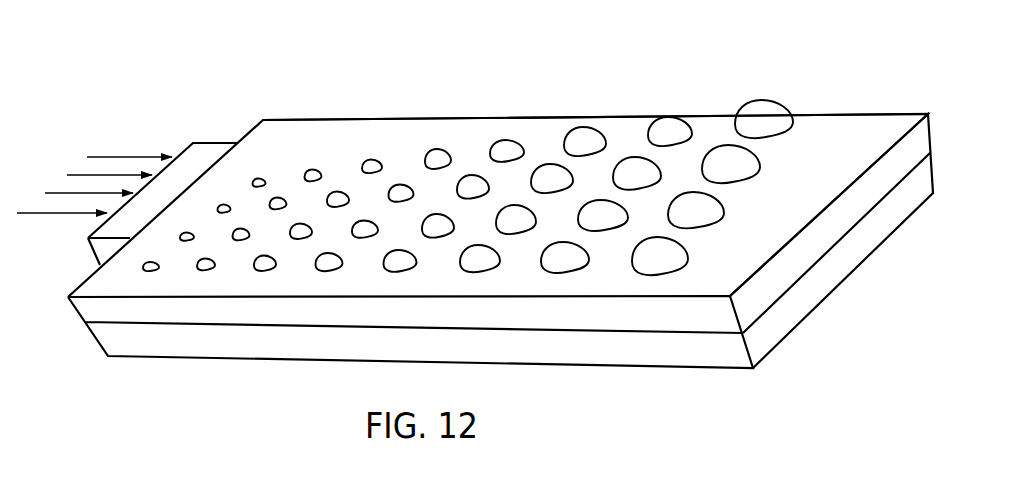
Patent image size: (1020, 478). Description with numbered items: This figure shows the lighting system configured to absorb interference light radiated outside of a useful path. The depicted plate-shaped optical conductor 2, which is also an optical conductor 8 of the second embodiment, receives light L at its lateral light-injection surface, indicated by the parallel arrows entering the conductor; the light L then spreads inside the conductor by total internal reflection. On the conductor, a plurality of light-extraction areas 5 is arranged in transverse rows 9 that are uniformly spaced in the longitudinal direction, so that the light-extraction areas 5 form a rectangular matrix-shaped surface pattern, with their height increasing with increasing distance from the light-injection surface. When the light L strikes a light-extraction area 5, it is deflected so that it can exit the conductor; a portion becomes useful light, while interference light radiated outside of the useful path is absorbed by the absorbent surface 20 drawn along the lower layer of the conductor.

The optical conductor 2 is at (88, 242).
The light-extraction area 5 is at (442, 150).
The optical conductor 8 is at (318, 138).
The transverse row 9 is at (513, 114).
The absorbent surface 20 is at (113, 342).
The light L is at (120, 153).